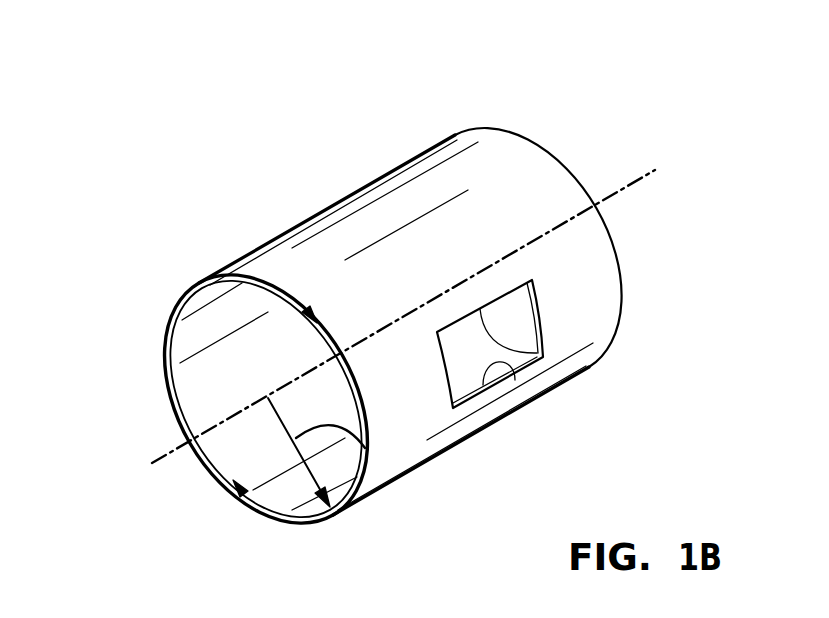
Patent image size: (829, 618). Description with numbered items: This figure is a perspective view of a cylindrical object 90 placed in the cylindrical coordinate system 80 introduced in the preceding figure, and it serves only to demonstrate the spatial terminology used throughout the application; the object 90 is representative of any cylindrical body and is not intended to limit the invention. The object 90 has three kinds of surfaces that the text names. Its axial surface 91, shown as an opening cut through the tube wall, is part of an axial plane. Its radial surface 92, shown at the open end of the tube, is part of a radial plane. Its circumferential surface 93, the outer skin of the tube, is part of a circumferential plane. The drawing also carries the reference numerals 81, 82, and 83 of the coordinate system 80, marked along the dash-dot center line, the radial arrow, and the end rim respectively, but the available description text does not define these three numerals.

The cylindrical coordinate system 80 is at (581, 147).
The longitudinal axis 81 is at (163, 452).
The radius 82 is at (372, 440).
The open end rim 83 is at (182, 291).
The object 90 is at (424, 123).
The axial surface 91 is at (513, 367).
The radial surface 92 is at (270, 512).
The circumferential surface 93 is at (363, 223).